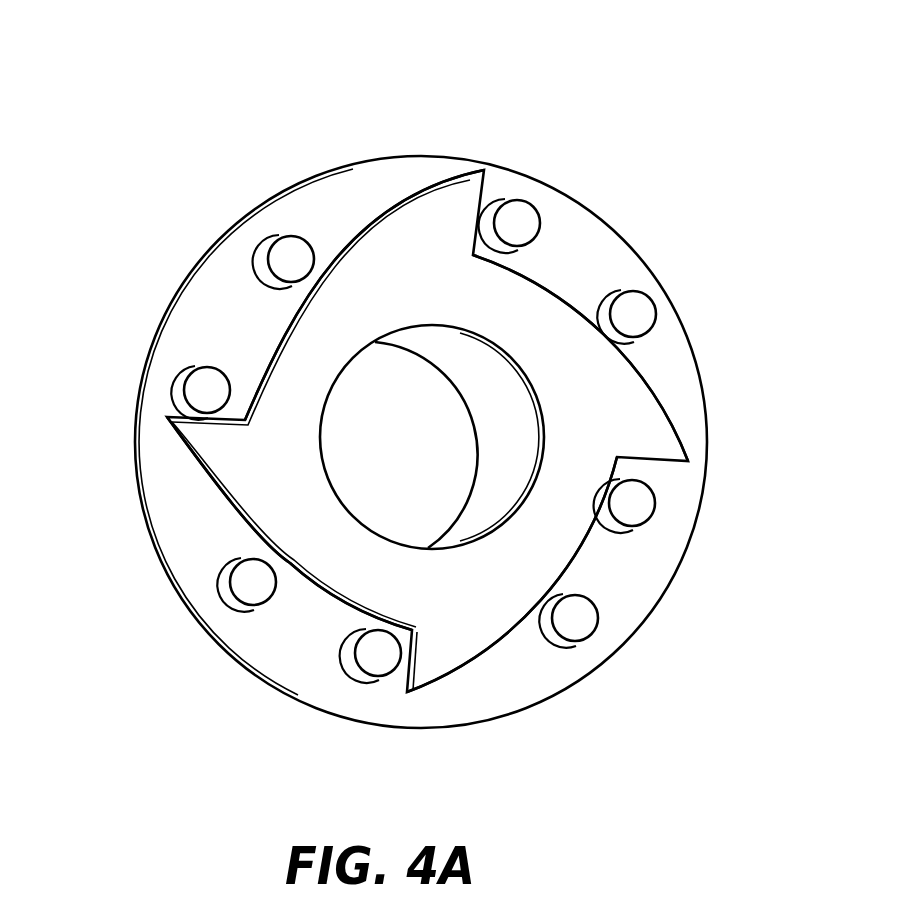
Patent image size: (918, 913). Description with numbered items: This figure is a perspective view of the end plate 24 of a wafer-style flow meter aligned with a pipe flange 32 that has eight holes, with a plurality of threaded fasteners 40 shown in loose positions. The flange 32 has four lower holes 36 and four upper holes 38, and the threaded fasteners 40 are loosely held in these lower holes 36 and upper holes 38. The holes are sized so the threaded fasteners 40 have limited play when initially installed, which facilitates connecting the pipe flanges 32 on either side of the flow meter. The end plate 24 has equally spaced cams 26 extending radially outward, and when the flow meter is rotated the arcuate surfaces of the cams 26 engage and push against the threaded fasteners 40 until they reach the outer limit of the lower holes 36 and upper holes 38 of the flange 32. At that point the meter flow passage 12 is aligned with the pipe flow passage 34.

The meter flow passage 12 is at (545, 385).
The end plate 24 is at (598, 556).
The cams 26 is at (443, 178).
The flange 32 is at (291, 159).
The pipe flow passage 34 is at (500, 416).
The lower holes 36 is at (622, 532).
The upper holes 38 is at (258, 252).
The threaded fasteners 40 is at (290, 267).